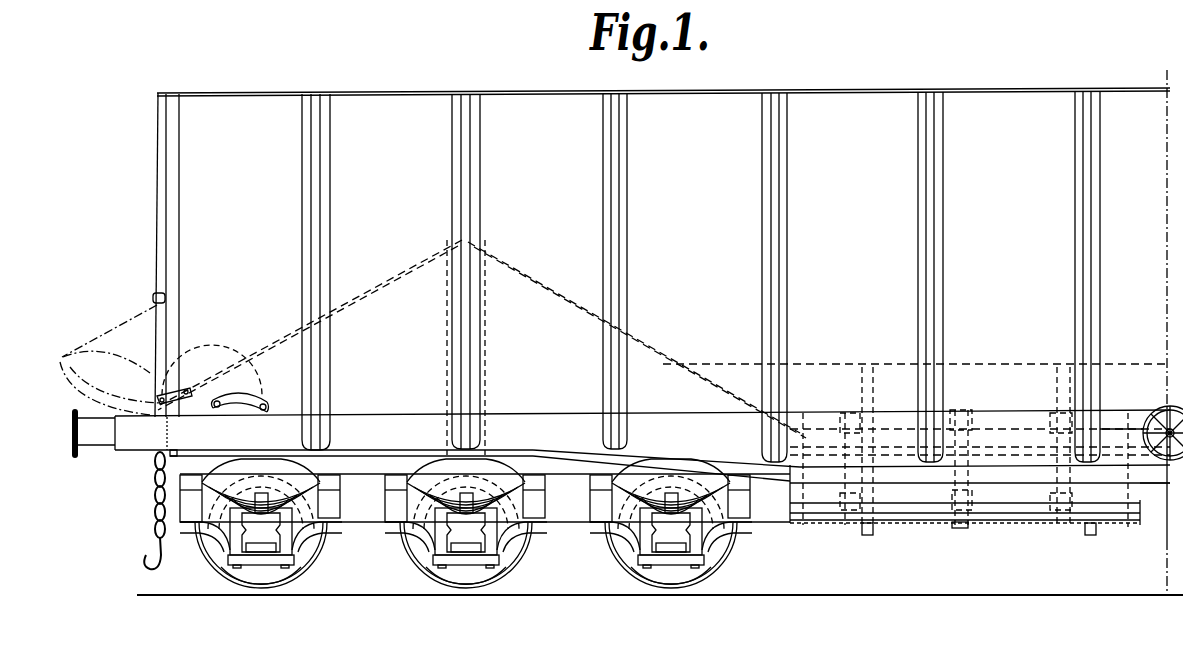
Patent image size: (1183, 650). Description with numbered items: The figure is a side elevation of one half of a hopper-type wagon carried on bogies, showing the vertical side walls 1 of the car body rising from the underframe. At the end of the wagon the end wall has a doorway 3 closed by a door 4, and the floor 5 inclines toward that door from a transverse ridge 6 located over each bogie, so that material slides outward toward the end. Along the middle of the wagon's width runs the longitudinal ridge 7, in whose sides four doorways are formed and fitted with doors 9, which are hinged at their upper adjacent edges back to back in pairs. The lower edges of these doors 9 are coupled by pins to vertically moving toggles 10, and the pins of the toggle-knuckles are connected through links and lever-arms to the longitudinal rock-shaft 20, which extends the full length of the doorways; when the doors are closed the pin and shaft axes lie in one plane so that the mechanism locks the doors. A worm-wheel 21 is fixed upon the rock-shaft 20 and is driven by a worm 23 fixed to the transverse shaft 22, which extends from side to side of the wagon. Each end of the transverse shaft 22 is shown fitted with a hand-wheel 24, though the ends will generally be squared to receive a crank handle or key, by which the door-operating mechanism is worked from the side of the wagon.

The vertical side wall 1 is at (622, 338).
The doorway 3 is at (153, 298).
The door 4 is at (176, 333).
The floor 5 is at (360, 290).
The transverse ridge 6 is at (464, 241).
The longitudinal ridge 7 is at (1024, 365).
The door 9 is at (965, 469).
The toggle 10 is at (862, 524).
The longitudinal rock-shaft 20 is at (999, 456).
The worm-wheel 21 is at (1132, 481).
The transverse shaft 22 is at (1142, 412).
The worm 23 is at (1100, 430).
The hand-wheel 24 is at (1168, 373).